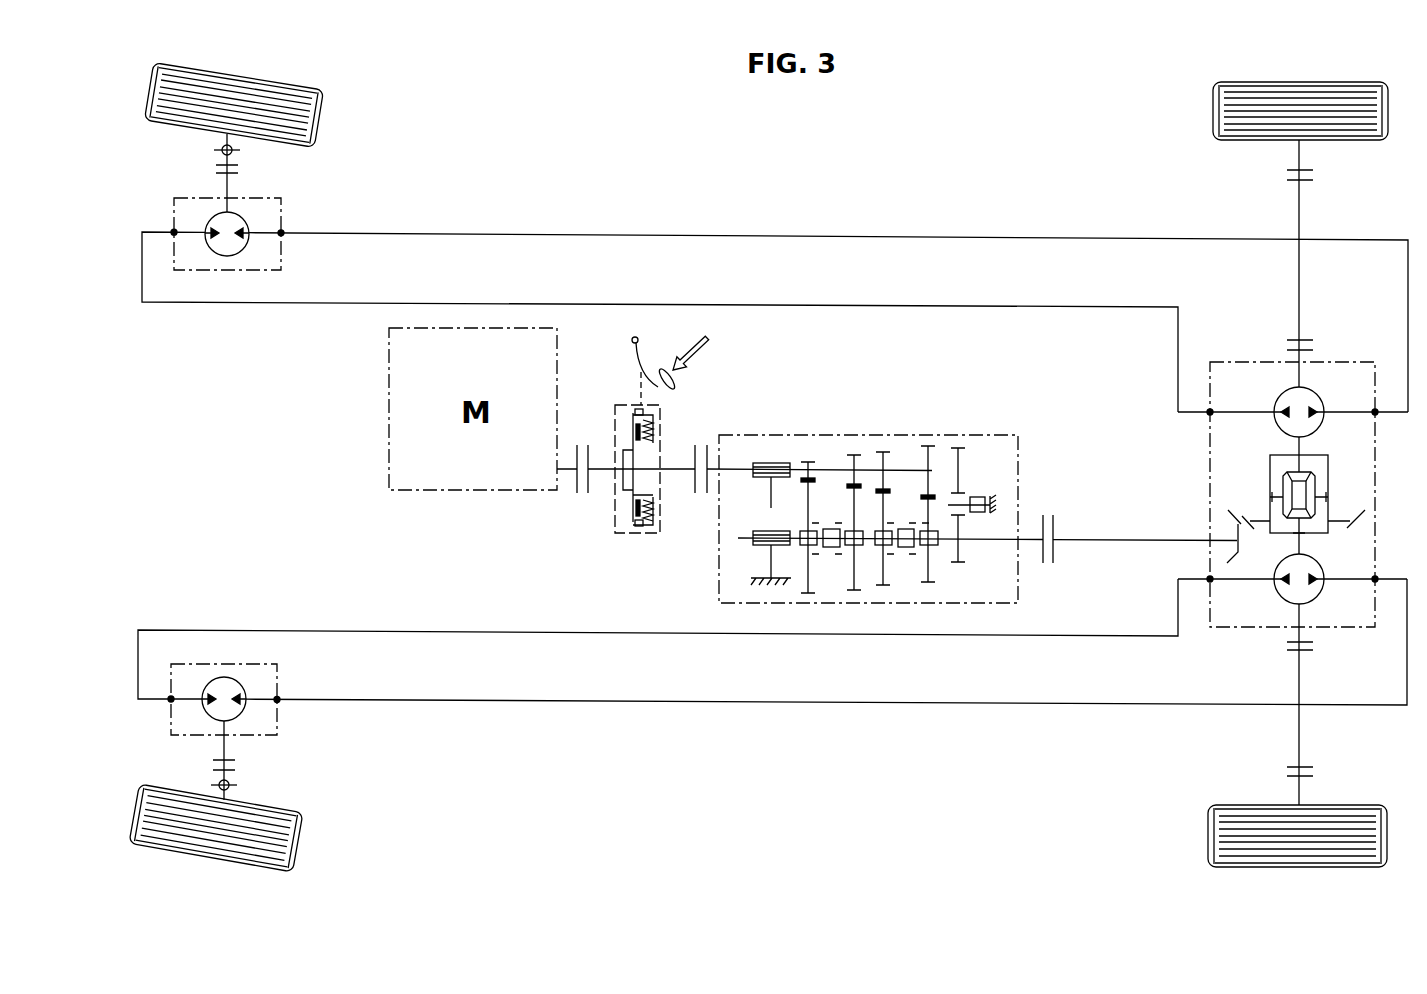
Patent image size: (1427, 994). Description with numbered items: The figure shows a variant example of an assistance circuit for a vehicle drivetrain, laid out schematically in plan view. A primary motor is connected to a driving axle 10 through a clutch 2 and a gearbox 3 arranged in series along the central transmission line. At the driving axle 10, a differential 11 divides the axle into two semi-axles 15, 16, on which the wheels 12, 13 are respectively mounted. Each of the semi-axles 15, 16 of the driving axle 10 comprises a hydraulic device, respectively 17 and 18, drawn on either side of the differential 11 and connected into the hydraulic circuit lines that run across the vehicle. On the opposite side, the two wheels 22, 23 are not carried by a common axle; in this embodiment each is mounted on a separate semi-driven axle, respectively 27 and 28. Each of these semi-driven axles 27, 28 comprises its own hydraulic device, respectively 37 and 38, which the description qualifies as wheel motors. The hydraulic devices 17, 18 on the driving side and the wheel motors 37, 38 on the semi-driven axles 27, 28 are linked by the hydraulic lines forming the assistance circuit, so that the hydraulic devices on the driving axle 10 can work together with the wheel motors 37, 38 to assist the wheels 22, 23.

The clutch 2 is at (611, 496).
The gearbox 3 is at (716, 556).
The driving axle 10 is at (1312, 545).
The differential 11 is at (1338, 472).
The wheel 12 is at (1352, 126).
The wheel 13 is at (1352, 850).
The semi-axle 15 is at (1299, 213).
The semi-axle 16 is at (1299, 703).
The hydraulic device 17 is at (1273, 432).
The hydraulic device 18 is at (1272, 598).
The wheel 22 is at (289, 103).
The wheel 23 is at (272, 863).
The semi-driven axle 27 is at (224, 186).
The semi-driven axle 28 is at (228, 750).
The hydraulic device 37 is at (227, 258).
The hydraulic device 38 is at (225, 677).